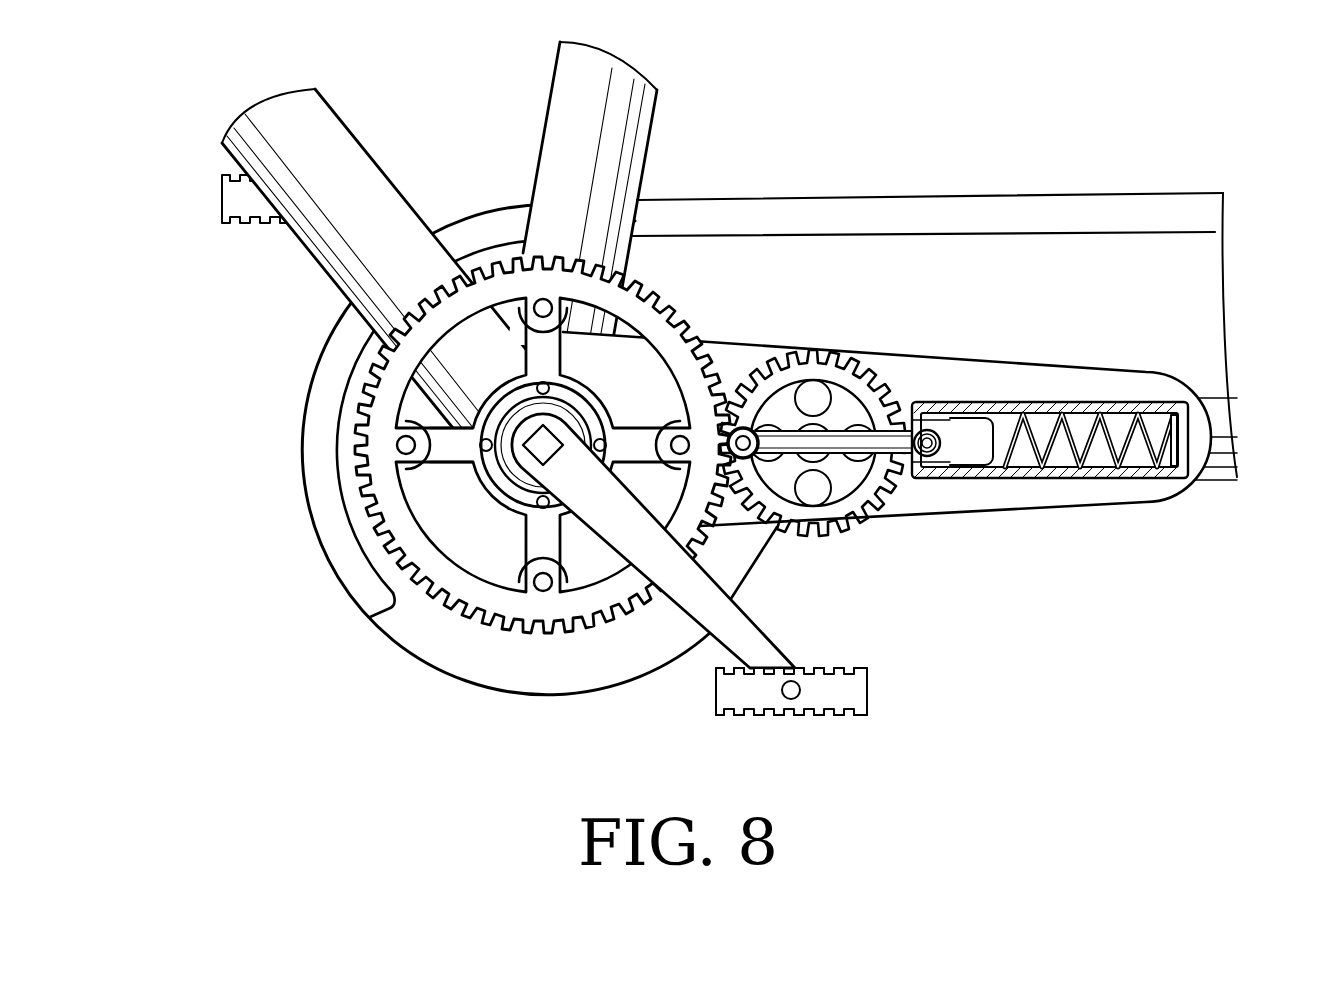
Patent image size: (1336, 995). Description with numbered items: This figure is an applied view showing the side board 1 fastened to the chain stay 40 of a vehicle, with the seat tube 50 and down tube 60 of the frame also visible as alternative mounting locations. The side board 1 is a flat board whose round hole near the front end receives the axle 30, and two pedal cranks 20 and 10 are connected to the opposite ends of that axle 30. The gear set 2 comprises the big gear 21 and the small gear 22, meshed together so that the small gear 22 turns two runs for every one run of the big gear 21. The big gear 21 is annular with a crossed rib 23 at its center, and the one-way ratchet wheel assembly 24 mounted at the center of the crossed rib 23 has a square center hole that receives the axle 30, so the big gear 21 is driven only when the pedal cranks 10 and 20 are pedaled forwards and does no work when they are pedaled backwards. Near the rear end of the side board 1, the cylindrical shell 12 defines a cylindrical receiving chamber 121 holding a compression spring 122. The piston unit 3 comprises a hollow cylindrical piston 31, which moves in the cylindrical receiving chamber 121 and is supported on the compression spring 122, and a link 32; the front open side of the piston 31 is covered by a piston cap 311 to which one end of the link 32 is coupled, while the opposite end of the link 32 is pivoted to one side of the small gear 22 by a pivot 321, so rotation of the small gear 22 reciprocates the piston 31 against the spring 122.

The side board 1 is at (940, 356).
The gear set 2 is at (509, 366).
The piston unit 3 is at (835, 432).
The pedal crank 10 is at (515, 445).
The cylindrical shell 12 is at (1120, 407).
The pedal crank 20 is at (720, 620).
The big gear 21 is at (458, 583).
The small gear 22 is at (843, 380).
The crossed rib 23 is at (442, 447).
The one-way ratchet wheel assembly 24 is at (490, 422).
The axle 30 is at (543, 443).
The hollow cylindrical piston 31 is at (993, 403).
The link 32 is at (787, 438).
The chain stay 40 is at (1240, 405).
The seat tube 50 is at (608, 128).
The down tube 60 is at (322, 152).
The cylindrical receiving chamber 121 is at (1100, 458).
The compression spring 122 is at (1166, 456).
The piston cap 311 is at (937, 458).
The pivot 321 is at (743, 450).